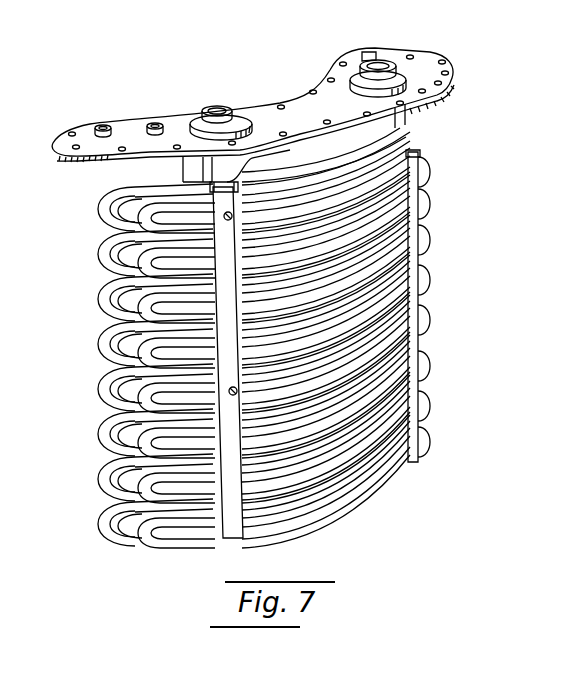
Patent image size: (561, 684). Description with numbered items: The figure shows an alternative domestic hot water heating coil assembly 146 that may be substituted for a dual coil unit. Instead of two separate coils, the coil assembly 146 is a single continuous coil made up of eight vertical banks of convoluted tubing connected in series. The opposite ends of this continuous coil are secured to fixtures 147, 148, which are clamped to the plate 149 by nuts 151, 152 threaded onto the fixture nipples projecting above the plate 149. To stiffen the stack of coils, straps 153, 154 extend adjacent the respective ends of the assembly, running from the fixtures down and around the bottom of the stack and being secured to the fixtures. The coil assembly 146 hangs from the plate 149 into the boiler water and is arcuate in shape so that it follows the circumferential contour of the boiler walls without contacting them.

The domestic hot water heating coil assembly 146 is at (97, 307).
The fixture 147 is at (206, 169).
The fixture 148 is at (433, 33).
The plate 149 is at (133, 128).
The nut 151 is at (205, 120).
The nut 152 is at (360, 52).
The strap 153 is at (233, 538).
The strap 154 is at (413, 462).